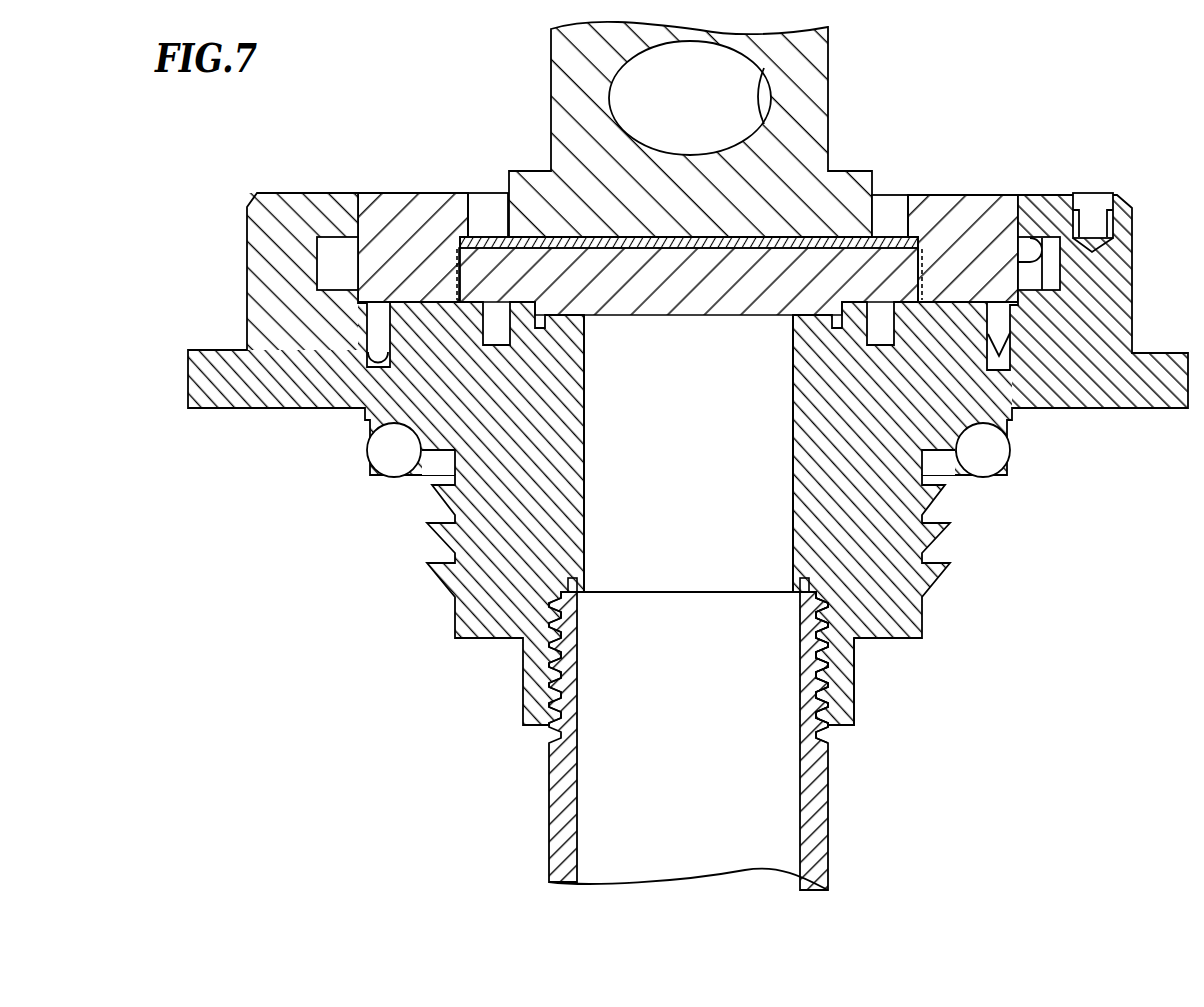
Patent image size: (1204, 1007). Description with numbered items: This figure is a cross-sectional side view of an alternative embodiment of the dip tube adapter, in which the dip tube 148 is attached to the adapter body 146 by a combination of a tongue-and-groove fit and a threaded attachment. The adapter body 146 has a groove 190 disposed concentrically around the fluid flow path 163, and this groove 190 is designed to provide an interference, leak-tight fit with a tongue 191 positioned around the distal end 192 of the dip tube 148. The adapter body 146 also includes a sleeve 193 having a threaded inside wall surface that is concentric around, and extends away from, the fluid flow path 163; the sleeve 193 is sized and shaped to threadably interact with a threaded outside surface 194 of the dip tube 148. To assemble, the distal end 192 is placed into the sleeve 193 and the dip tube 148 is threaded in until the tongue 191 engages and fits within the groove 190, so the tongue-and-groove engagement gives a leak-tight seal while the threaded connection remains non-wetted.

The adapter body 146 is at (902, 505).
The dip tube 148 is at (849, 803).
The fluid flow path 163 is at (586, 500).
The groove 190 is at (805, 578).
The tongue 191 is at (573, 583).
The distal end 192 is at (800, 591).
The sleeve 193 is at (815, 673).
The threaded outside surface 194 is at (820, 657).